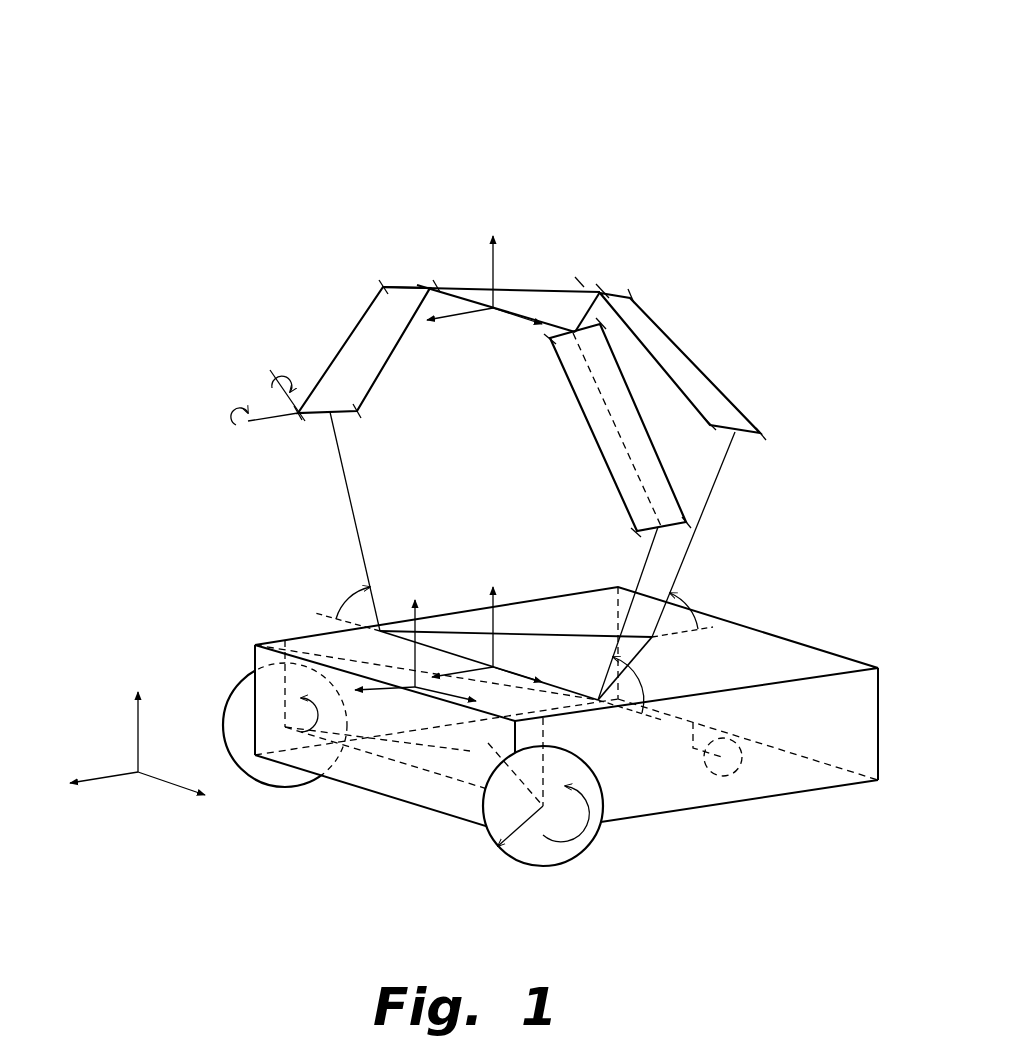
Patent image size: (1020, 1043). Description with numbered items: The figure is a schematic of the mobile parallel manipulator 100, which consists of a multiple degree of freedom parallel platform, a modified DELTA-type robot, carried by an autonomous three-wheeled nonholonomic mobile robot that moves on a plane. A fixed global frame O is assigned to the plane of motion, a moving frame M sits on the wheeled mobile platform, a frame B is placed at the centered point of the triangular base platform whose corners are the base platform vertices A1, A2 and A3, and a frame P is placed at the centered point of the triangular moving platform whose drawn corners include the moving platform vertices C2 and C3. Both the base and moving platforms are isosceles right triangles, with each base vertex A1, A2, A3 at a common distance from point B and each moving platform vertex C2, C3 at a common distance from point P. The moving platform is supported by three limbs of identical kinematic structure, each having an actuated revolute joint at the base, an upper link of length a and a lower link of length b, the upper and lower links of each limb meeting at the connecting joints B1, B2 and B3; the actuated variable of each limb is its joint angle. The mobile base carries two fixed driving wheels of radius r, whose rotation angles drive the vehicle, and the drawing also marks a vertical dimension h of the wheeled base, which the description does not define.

The mobile parallel manipulator 100 is at (692, 125).
The base platform vertex A1 is at (630, 640).
The base platform vertex A2 is at (693, 550).
The base platform vertex A3 is at (357, 540).
The connecting joint B1 is at (617, 427).
The connecting joint B2 is at (687, 364).
The connecting joint B3 is at (330, 373).
The moving platform vertex C2 is at (601, 283).
The moving platform vertex C3 is at (409, 272).
The upper link length a is at (329, 338).
The lower link length b is at (341, 526).
The base height h is at (255, 645).
The driving wheel radius r is at (492, 840).